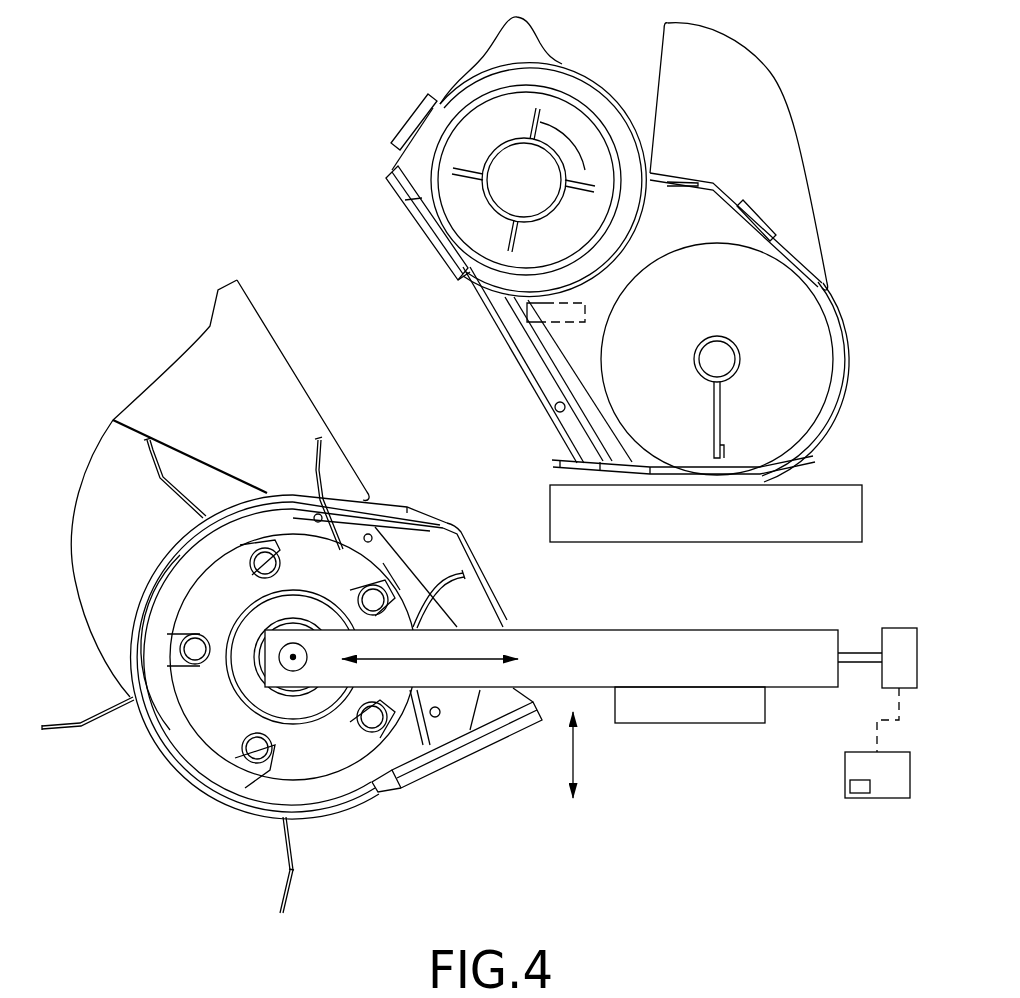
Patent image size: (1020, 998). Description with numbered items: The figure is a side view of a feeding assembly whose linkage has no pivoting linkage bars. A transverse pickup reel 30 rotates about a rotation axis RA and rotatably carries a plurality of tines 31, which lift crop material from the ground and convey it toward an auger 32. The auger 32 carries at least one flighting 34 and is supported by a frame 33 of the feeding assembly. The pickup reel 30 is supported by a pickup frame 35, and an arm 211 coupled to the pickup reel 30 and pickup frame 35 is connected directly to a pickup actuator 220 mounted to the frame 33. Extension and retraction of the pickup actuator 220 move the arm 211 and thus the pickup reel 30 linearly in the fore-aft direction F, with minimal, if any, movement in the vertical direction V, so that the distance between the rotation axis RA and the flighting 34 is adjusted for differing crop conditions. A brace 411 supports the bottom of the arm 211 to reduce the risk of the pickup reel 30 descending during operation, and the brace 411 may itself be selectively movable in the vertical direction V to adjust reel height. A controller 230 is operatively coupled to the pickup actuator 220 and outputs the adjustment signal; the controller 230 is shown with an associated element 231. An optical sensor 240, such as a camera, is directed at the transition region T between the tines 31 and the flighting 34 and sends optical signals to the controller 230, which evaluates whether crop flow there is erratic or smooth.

The pickup reel 30 is at (215, 738).
The tines 31 is at (158, 478).
The auger 32 is at (835, 308).
The frame 33 is at (853, 478).
The flighting 34 is at (717, 428).
The pickup frame 35 is at (271, 377).
The arm 211 is at (662, 630).
The pickup actuator 220 is at (899, 624).
The controller 230 is at (850, 764).
The sensor 231 is at (860, 793).
The optical sensor 240 is at (527, 312).
The brace 411 is at (720, 723).
The rotation axis RA is at (293, 657).
The transition region T is at (530, 386).
The fore-aft direction F is at (472, 655).
The vertical direction V is at (572, 756).